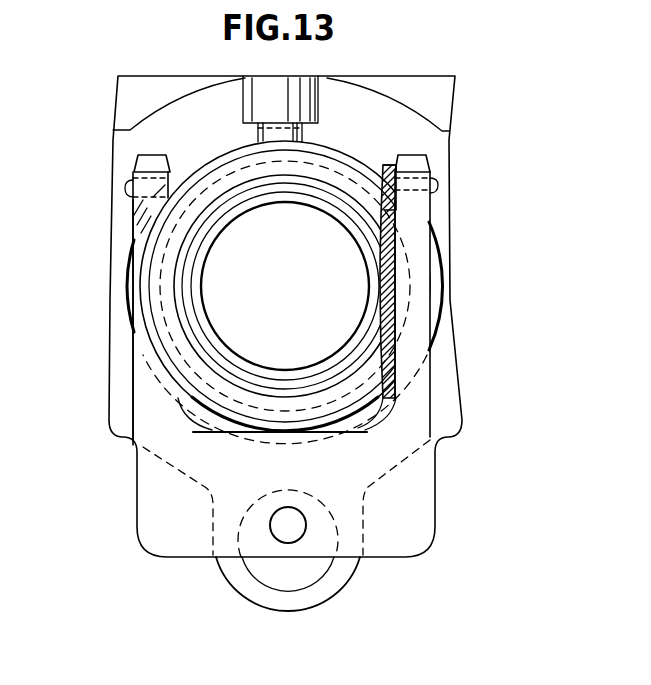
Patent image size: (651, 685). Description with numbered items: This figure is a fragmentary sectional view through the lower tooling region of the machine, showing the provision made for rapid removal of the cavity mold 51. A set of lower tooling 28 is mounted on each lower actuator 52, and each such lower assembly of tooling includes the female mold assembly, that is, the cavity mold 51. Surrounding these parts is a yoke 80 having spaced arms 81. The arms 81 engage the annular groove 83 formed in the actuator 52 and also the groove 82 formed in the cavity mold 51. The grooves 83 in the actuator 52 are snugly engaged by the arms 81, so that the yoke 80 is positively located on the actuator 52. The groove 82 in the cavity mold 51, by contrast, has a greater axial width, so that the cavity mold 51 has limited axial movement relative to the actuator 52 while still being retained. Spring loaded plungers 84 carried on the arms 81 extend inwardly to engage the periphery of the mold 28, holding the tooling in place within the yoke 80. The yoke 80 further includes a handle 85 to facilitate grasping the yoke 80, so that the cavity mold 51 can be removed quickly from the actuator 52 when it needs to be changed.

The yoke 80 is at (413, 398).
The cavity mold 51 is at (332, 147).
The spring loaded plungers 84 is at (172, 192).
The annular groove 83 is at (392, 206).
The arms 81 is at (417, 230).
The groove 82 is at (395, 278).
The lower tooling 28 is at (393, 313).
The lower actuator 52 is at (150, 362).
The handle 85 is at (291, 517).